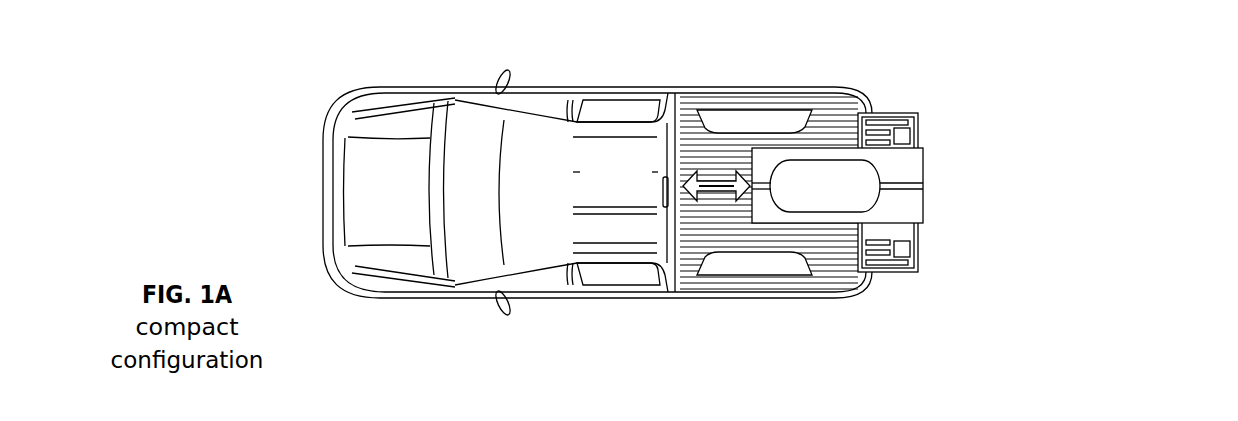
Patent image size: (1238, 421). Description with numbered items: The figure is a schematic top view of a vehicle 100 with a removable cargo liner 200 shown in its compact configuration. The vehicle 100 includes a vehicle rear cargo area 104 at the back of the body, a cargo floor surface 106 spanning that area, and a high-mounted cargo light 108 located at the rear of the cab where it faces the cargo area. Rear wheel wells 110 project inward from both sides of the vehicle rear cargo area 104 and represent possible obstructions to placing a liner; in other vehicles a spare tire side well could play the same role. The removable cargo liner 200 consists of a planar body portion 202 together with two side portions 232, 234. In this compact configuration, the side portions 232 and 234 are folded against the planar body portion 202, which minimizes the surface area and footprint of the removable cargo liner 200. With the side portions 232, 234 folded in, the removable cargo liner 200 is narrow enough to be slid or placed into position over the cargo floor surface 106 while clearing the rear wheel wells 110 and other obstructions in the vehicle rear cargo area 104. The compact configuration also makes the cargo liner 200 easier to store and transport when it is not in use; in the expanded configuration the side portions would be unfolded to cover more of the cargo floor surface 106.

The vehicle 100 is at (660, 191).
The vehicle rear cargo area 104 is at (802, 191).
The cargo floor surface 106 is at (820, 120).
The high-mounted cargo light 108 is at (660, 193).
The rear wheel wells 110 is at (702, 191).
The removable cargo liner 200 is at (951, 192).
The planar body portion 202 is at (806, 197).
The side portion 232 is at (921, 168).
The side portion 234 is at (920, 207).